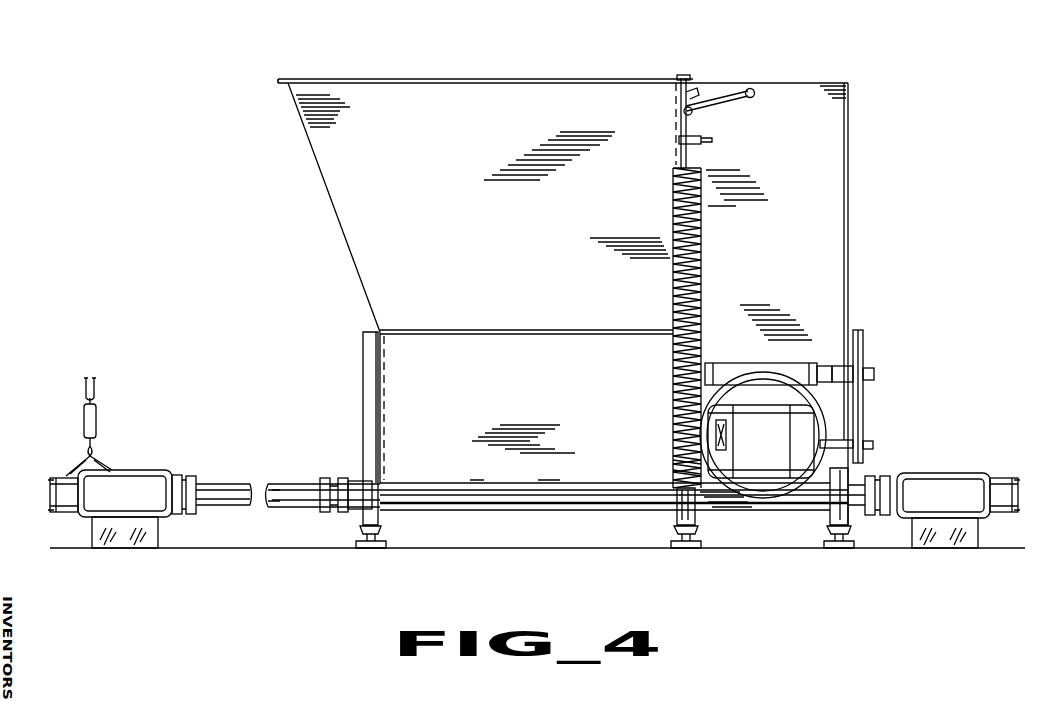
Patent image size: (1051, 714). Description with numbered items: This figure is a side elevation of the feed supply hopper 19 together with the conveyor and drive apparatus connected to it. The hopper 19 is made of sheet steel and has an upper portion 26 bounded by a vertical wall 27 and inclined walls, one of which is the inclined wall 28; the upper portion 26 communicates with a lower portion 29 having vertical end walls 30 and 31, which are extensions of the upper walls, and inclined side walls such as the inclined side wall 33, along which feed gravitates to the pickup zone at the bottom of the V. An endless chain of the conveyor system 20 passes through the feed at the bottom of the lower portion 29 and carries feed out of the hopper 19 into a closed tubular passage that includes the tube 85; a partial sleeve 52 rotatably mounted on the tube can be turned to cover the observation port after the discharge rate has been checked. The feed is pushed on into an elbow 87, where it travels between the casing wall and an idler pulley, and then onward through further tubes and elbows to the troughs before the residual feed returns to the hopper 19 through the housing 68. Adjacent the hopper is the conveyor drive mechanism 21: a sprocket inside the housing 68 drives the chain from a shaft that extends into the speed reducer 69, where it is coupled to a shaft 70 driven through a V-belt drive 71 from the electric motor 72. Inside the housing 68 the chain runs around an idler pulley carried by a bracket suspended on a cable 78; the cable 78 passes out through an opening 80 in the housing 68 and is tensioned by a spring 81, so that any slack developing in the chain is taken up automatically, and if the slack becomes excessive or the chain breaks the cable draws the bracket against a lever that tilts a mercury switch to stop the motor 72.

The supply hopper 19 is at (312, 122).
The upper portion 26 is at (488, 112).
The inclined wall 28 is at (449, 199).
The vertical wall 27 is at (676, 120).
The cable 78 is at (716, 102).
The opening 80 is at (753, 90).
The spring 81 is at (700, 192).
The housing 68 is at (790, 246).
The inclined side wall 33 is at (552, 409).
The lower portion 29 is at (392, 429).
The vertical end wall 30 is at (386, 383).
The vertical end wall 31 is at (672, 397).
The conveyor system 20 is at (297, 481).
The partial sleeve 52 is at (356, 491).
The tube 85 is at (283, 508).
The speed reducer 69 is at (731, 378).
The electric motor 72 is at (786, 452).
The shaft 70 is at (838, 374).
The V-belt drive 71 is at (860, 394).
The conveyor drive mechanism 21 is at (866, 408).
The elbow 87 is at (155, 470).